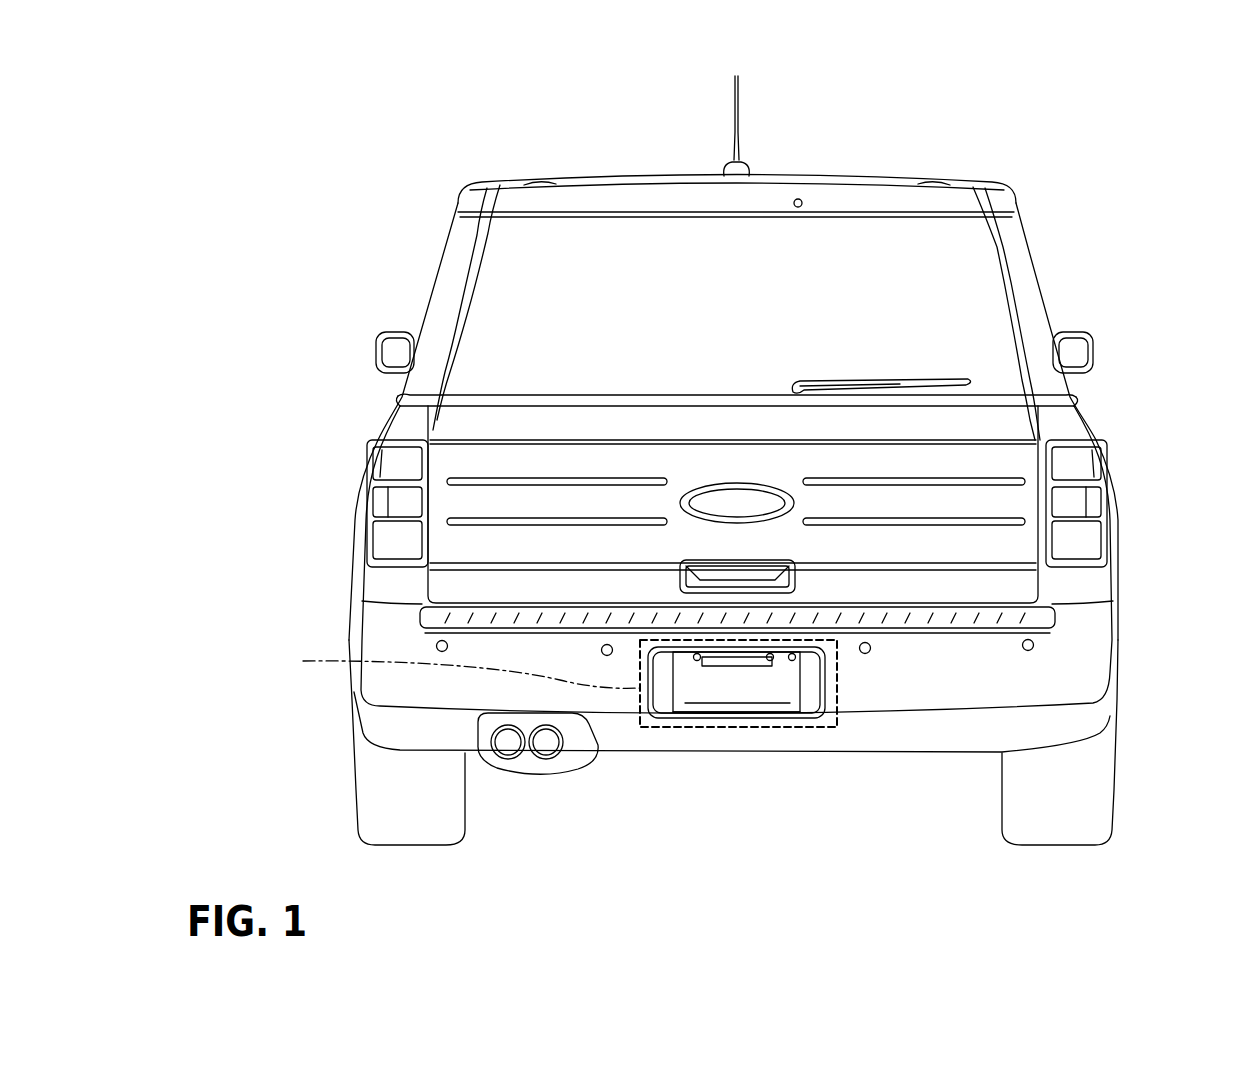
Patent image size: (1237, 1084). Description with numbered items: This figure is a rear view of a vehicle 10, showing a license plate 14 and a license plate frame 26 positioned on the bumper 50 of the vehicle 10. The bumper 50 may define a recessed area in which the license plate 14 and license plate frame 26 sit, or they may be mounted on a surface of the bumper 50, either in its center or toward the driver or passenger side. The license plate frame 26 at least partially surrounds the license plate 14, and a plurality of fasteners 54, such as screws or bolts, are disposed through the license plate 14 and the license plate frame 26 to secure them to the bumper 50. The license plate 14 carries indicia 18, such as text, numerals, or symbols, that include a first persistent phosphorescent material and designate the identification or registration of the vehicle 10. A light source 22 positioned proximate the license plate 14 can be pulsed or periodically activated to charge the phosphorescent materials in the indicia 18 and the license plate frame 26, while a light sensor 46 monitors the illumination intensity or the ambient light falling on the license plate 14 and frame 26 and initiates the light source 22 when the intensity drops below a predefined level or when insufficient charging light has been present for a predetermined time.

The vehicle 10 is at (1084, 220).
The license plate 14 is at (692, 727).
The indicia 18 is at (766, 708).
The light source 22 is at (793, 652).
The license plate frame 26 is at (667, 716).
The light sensor 46 is at (843, 660).
The bumper 50 is at (1037, 667).
The fasteners 54 is at (694, 660).